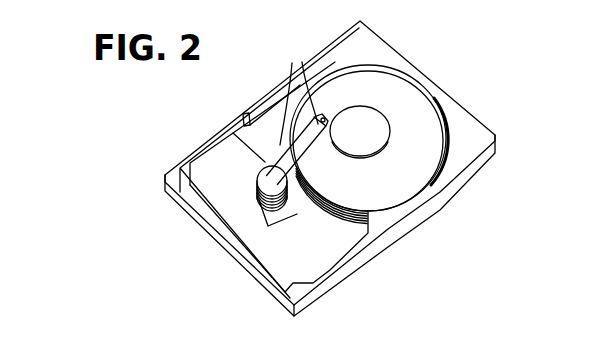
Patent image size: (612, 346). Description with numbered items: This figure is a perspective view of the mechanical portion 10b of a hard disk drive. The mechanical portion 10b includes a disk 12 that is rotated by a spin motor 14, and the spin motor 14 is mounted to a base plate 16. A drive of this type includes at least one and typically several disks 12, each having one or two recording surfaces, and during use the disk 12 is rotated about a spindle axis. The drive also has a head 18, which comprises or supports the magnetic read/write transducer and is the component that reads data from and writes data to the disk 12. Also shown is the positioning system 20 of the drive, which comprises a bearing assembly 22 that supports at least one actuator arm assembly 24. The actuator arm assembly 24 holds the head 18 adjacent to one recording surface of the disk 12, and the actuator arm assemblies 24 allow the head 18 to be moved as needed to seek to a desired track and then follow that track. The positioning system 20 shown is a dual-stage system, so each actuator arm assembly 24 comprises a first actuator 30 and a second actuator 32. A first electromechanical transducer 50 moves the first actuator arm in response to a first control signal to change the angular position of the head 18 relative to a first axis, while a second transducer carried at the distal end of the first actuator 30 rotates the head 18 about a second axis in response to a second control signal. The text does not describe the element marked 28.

The mechanical portion 10b is at (150, 192).
The disk 12 is at (371, 88).
The spin motor 14 is at (377, 123).
The base plate 16 is at (273, 260).
The head 18 is at (300, 60).
The positioning system 20 is at (302, 217).
The bearing assembly 22 is at (283, 218).
The actuator arm assembly 24 is at (312, 150).
The hub region 28 is at (424, 136).
The first actuator 30 is at (304, 158).
The second actuator 32 is at (280, 80).
The first electromechanical transducer 50 is at (213, 200).